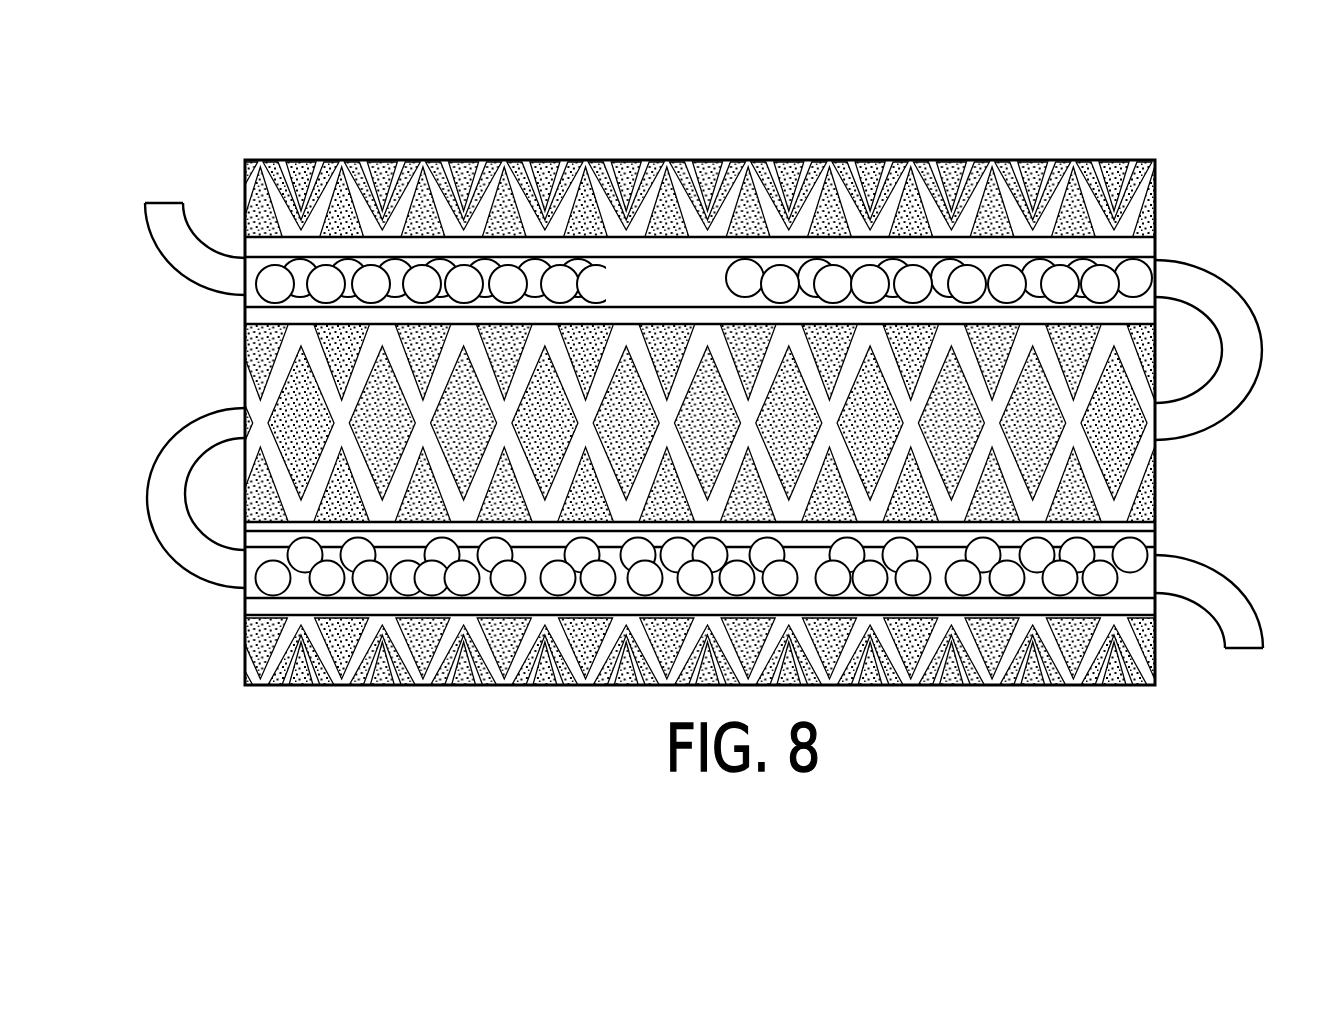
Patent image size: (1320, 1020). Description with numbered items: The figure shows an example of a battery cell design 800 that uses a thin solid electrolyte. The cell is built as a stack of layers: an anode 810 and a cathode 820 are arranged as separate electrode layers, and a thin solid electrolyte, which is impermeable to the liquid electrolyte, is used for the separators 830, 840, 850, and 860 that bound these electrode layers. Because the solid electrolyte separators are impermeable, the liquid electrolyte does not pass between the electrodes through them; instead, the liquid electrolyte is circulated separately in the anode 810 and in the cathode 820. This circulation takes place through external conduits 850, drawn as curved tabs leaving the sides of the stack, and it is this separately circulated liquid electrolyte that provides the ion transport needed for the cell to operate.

The battery cell design 800 is at (724, 377).
The anode 810 is at (1097, 282).
The cathode 820 is at (1112, 573).
The separator 830 is at (362, 248).
The separator 840 is at (268, 315).
The separator / external conduit 850 is at (1262, 320).
The separator 860 is at (258, 610).